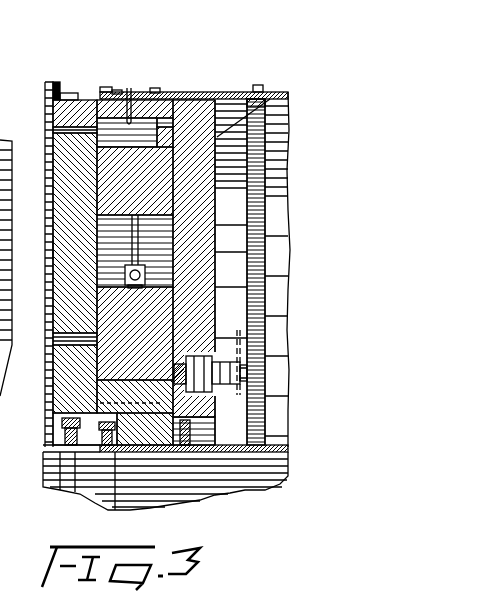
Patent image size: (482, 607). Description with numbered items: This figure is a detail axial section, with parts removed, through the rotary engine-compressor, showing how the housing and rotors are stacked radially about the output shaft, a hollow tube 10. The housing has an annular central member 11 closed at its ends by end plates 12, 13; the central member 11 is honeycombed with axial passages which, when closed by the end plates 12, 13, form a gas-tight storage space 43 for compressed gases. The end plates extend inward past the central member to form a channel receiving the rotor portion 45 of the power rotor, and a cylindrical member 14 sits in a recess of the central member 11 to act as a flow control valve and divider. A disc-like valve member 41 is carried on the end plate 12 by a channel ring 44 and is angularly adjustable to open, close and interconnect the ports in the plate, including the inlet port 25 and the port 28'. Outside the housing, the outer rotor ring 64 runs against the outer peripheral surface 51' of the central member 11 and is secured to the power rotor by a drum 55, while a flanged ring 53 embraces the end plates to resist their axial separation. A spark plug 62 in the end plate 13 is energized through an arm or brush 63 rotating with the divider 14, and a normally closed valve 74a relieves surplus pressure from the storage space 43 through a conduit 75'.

The hollow tube 10 is at (0, 494).
The central member 11 is at (85, 200).
The end plate 12 is at (60, 172).
The end plate 13 is at (266, 98).
The cylindrical member 14 is at (110, 357).
The inlet port 25 is at (62, 343).
The port 28' is at (41, 264).
The valve member 41 is at (53, 248).
The storage space 43 is at (215, 192).
The channel ring 44 is at (55, 84).
The rotor portion 45 is at (47, 457).
The outer peripheral surface 51' is at (156, 249).
The flanged ring 53 is at (182, 455).
The drum 55 is at (197, 92).
The spark plug 62 is at (224, 393).
The arm or brush 63 is at (241, 350).
The ring 64 is at (130, 97).
The normally closed valve 74a is at (147, 276).
The conduit 75' is at (171, 251).